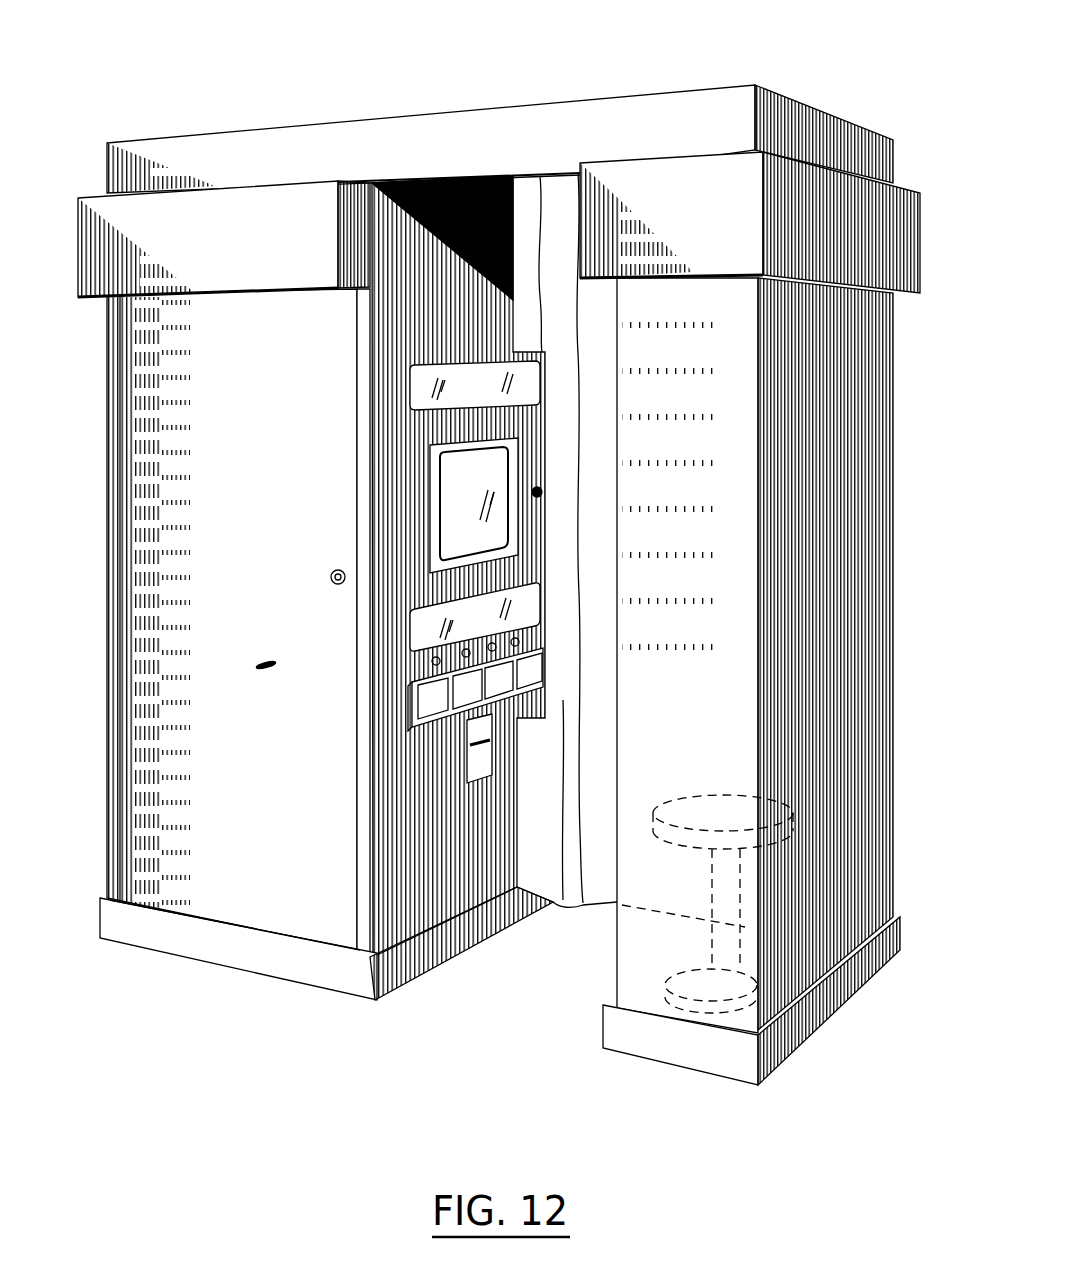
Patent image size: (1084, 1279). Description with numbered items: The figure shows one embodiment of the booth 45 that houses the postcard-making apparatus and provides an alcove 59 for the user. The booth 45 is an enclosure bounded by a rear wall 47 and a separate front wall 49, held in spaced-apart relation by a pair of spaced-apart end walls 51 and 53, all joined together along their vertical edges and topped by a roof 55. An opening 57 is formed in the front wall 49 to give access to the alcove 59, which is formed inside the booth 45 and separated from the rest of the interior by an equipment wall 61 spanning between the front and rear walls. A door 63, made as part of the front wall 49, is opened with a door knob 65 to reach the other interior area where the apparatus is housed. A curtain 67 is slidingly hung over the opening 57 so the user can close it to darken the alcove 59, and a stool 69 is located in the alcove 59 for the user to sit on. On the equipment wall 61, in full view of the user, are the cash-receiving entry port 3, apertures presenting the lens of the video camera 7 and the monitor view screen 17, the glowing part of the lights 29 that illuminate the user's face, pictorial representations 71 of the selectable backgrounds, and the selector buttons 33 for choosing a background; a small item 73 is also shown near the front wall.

The entry port 3 is at (490, 740).
The video camera 7 is at (545, 497).
The view screen 17 is at (453, 473).
The lights 29 is at (417, 378).
The selector buttons 33 is at (437, 663).
The booth 45 is at (252, 210).
The rear wall 47 is at (873, 540).
The front wall 49 is at (627, 970).
The end wall 51 is at (147, 387).
The end wall 53 is at (868, 412).
The roof 55 is at (593, 130).
The opening 57 is at (535, 955).
The alcove 59 is at (430, 262).
The equipment wall 61 is at (403, 493).
The door 63 is at (232, 893).
The door knob 65 is at (330, 577).
The curtain 67 is at (580, 718).
The stool 69 is at (725, 793).
The pictorial representations 71 is at (412, 727).
The key 73 is at (258, 670).